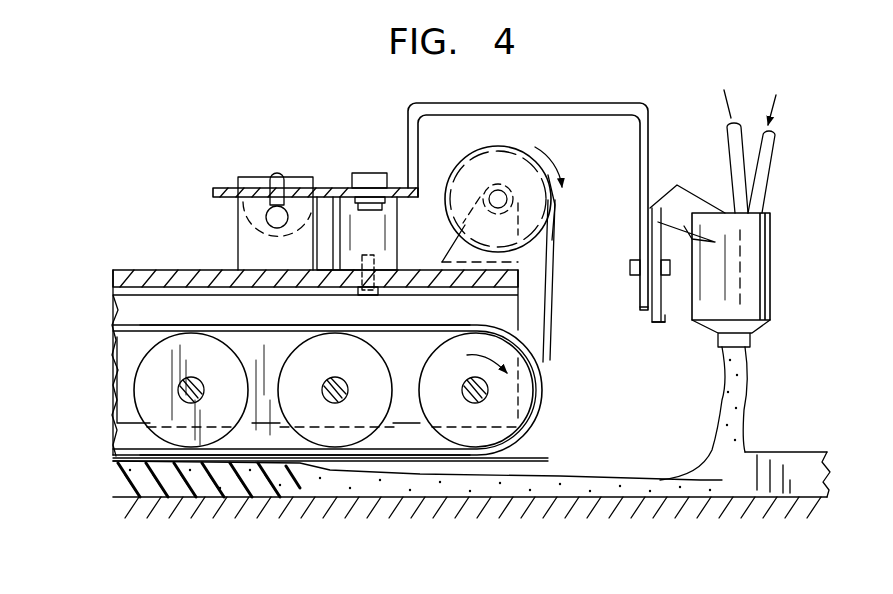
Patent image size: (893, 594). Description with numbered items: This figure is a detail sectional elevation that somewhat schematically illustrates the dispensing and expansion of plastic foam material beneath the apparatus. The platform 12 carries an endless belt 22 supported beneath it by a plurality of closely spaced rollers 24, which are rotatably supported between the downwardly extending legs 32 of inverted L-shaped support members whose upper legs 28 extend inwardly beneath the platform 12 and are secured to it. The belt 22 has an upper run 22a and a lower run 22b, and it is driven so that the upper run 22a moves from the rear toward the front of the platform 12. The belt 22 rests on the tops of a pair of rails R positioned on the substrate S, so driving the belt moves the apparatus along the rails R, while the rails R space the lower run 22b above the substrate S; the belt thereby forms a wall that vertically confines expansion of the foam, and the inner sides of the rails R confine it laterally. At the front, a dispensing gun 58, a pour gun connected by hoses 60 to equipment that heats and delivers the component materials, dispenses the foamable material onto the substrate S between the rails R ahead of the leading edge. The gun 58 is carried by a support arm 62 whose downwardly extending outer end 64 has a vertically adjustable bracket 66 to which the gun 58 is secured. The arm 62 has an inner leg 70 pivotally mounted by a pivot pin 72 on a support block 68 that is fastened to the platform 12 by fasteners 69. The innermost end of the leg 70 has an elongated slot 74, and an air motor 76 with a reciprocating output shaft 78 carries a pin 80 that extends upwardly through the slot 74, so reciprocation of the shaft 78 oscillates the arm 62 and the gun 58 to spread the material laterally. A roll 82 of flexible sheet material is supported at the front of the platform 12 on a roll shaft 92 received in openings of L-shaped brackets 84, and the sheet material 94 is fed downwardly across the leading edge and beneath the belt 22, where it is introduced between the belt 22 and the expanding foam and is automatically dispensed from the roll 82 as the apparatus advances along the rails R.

The platform 12 is at (158, 268).
The endless belt 22 is at (286, 420).
The upper run 22a is at (147, 333).
The lower run 22b is at (307, 452).
The rollers 24 is at (227, 363).
The upper legs 28 is at (135, 292).
The legs 32 is at (118, 390).
The dispensing gun 58 is at (775, 250).
The hoses 60 is at (760, 175).
The support arm 62 is at (573, 100).
The outer end 64 is at (645, 300).
The bracket 66 is at (657, 324).
The support block 68 is at (389, 256).
The fasteners 69 is at (375, 292).
The inner leg 70 is at (218, 187).
The pivot pin 72 is at (370, 172).
The elongated slot 74 is at (253, 190).
The air motor 76 is at (247, 237).
The reciprocating output shaft 78 is at (266, 217).
The pin 80 is at (278, 185).
The roll 82 is at (473, 170).
The L-shaped brackets 84 is at (520, 212).
The roll shaft 92 is at (502, 190).
The sheet material 94 is at (550, 312).
The rails R is at (780, 450).
The substrate S is at (798, 492).